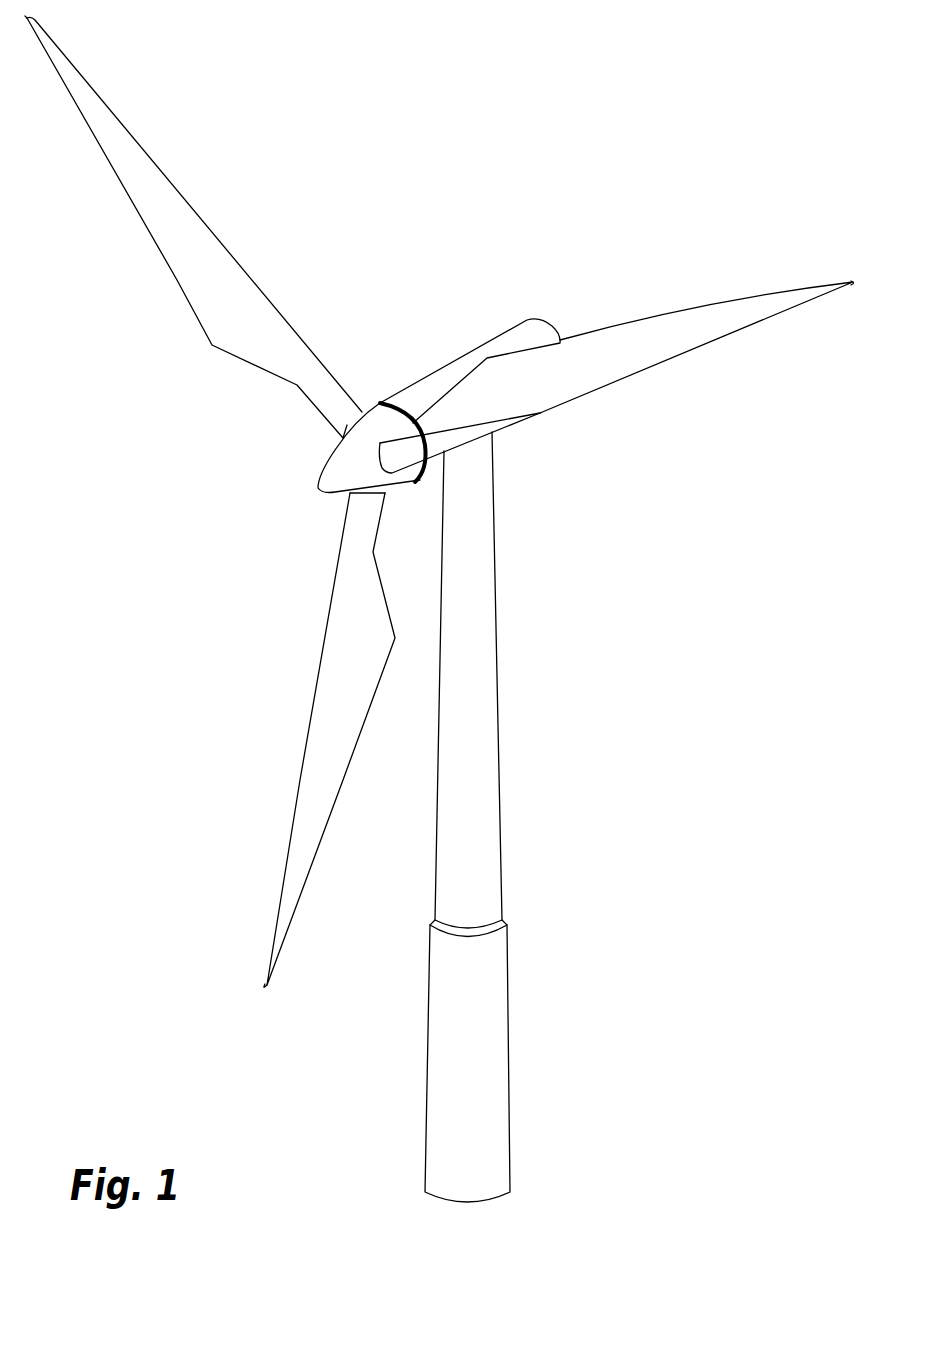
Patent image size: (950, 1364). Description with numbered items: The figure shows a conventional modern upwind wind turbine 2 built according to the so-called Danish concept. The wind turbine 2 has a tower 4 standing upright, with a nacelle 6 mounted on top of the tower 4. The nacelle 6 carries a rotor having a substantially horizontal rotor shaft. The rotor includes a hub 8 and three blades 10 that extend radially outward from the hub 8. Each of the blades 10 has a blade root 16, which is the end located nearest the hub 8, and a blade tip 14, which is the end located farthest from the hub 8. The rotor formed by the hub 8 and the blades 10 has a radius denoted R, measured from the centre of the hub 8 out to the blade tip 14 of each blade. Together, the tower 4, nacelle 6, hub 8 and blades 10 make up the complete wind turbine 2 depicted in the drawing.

The wind turbine 2 is at (593, 760).
The tower 4 is at (488, 682).
The nacelle 6 is at (433, 383).
The hub 8 is at (338, 467).
The blades 10 is at (227, 317).
The blade tip 14 is at (67, 73).
The blade root 16 is at (342, 432).